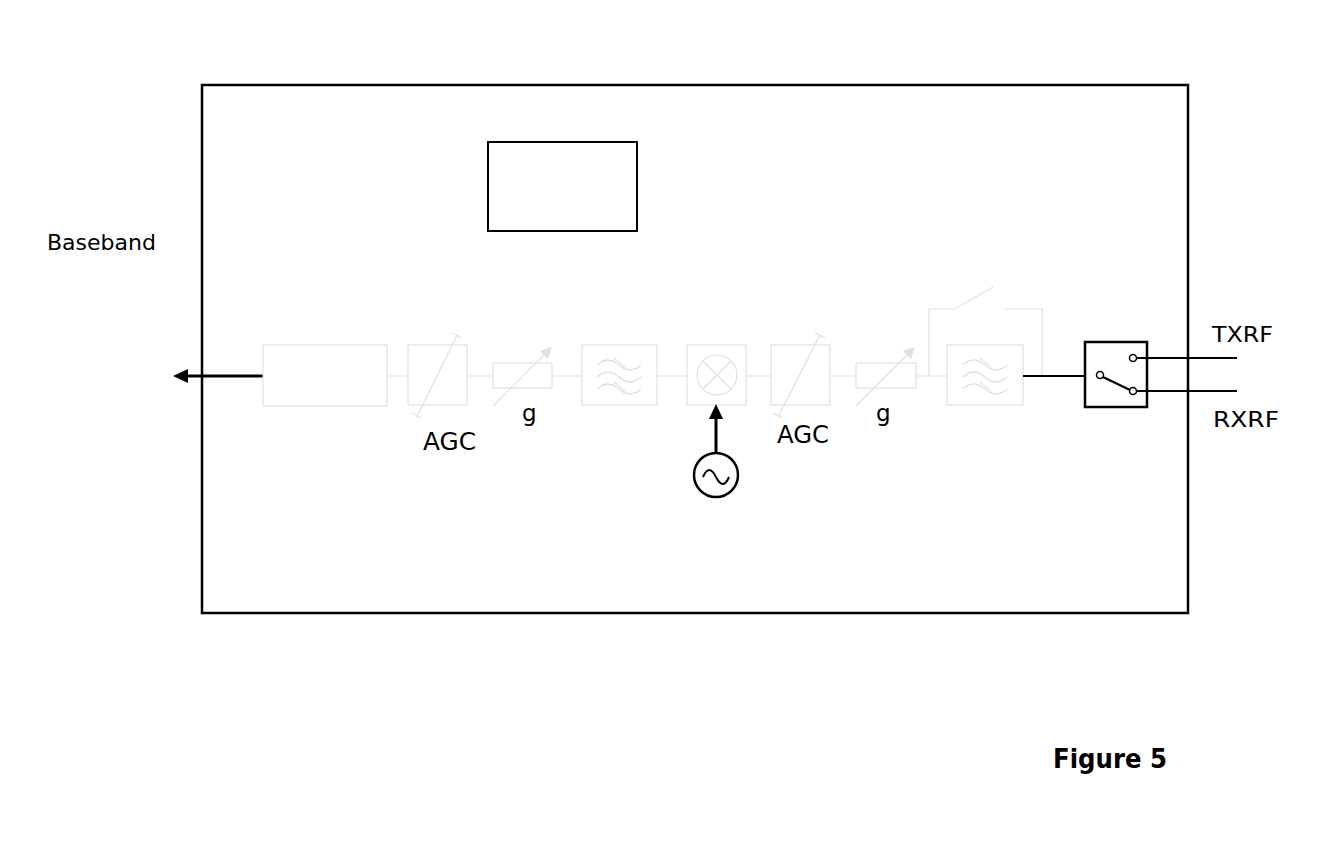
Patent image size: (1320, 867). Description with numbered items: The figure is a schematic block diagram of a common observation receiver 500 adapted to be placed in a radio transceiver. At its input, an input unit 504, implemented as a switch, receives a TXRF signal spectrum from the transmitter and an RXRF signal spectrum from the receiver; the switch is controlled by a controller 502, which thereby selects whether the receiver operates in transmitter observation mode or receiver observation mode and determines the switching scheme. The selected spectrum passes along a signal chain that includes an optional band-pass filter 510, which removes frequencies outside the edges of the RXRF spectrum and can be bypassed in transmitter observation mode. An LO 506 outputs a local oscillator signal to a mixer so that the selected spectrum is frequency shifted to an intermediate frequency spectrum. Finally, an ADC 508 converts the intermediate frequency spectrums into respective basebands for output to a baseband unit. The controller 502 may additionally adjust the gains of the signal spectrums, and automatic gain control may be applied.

The common observation receiver 500 is at (782, 85).
The controller 502 is at (617, 142).
The input unit 504 is at (1097, 343).
The LO (local oscillator) 506 is at (716, 497).
The ADC (analog-to-digital converter) 508 is at (340, 406).
The band-pass filter 510 is at (1013, 405).